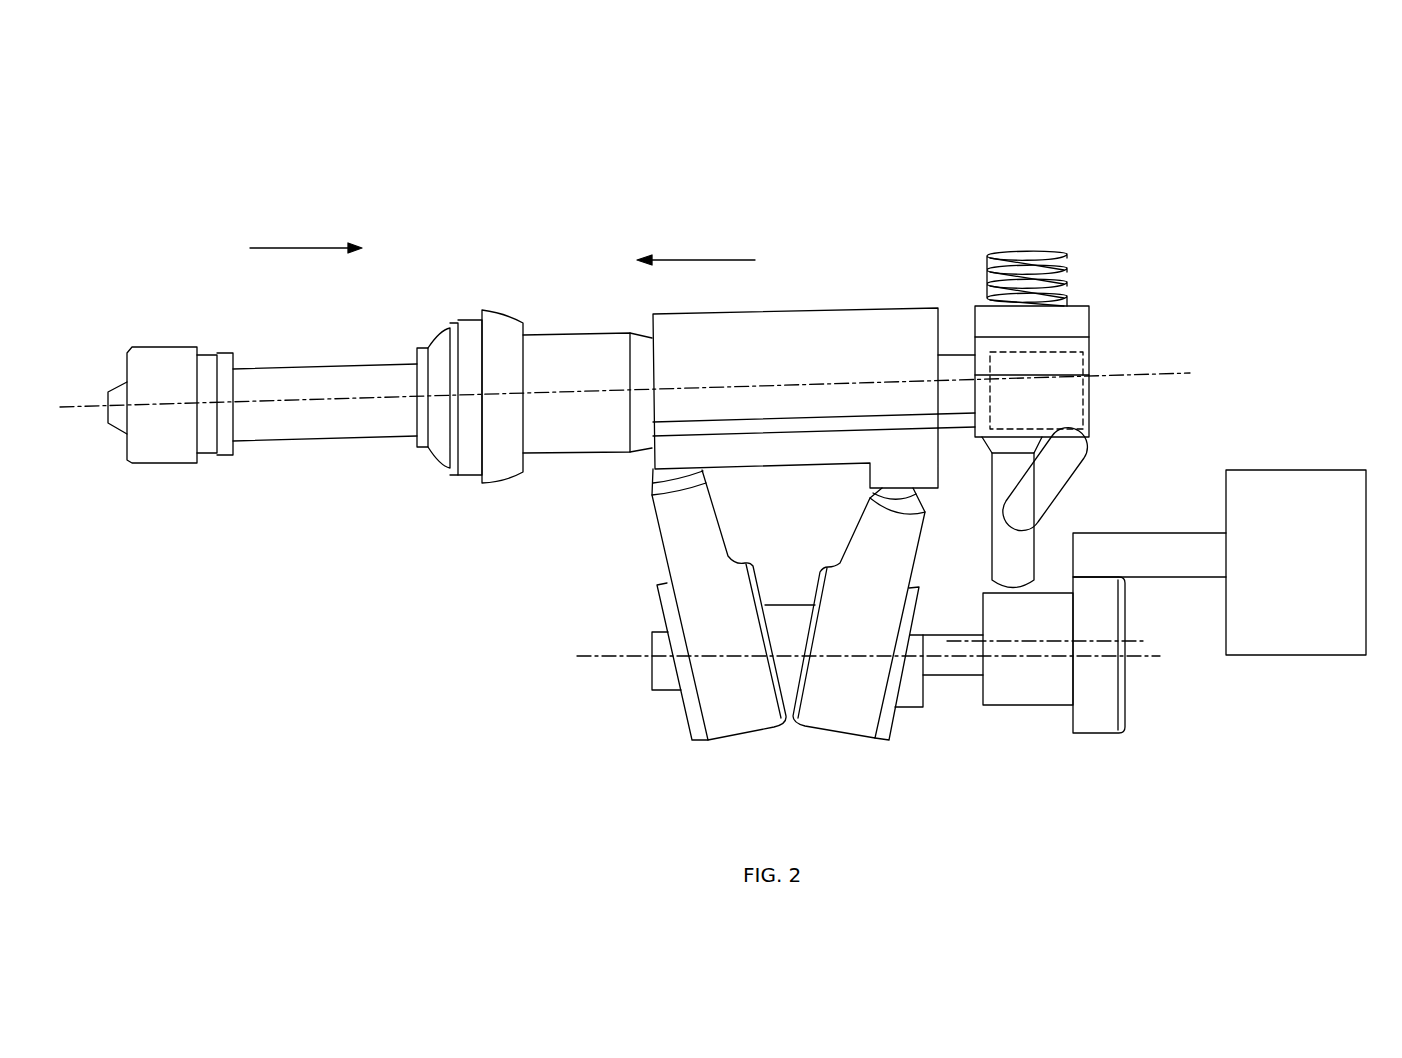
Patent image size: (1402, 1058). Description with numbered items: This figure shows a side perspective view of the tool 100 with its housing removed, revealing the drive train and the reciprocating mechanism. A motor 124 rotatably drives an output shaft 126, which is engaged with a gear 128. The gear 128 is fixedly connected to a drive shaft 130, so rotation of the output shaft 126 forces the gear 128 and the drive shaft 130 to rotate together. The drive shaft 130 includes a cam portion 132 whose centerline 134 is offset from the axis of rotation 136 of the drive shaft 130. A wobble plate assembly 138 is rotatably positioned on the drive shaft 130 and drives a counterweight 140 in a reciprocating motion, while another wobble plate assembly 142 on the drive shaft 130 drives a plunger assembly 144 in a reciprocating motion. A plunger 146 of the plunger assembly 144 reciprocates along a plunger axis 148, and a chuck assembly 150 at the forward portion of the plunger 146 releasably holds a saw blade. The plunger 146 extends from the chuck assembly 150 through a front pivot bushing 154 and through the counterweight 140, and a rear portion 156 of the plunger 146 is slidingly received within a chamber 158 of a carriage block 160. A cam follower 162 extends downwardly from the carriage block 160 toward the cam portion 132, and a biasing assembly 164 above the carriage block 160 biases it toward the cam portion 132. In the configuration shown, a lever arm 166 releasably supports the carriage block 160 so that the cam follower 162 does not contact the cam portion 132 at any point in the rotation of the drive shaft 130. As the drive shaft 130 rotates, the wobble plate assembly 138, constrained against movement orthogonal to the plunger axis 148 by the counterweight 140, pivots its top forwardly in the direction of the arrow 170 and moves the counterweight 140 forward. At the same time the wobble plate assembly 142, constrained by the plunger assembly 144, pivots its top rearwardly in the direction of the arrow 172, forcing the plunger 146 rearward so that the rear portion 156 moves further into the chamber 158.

The tool assembly 100 is at (709, 146).
The motor 124 is at (1282, 470).
The output shaft 126 is at (1170, 533).
The gear 128 is at (1092, 733).
The drive shaft 130 is at (932, 676).
The cam portion 132 is at (1000, 707).
The centerline 134 is at (948, 641).
The axis of rotation 136 is at (585, 655).
The wobble plate assembly 138 is at (832, 738).
The counterweight 140 is at (840, 308).
The wobble plate assembly 142 is at (708, 740).
The plunger assembly 144 is at (475, 245).
The plunger 146 is at (270, 440).
The plunger axis 148 is at (82, 406).
The chuck assembly 150 is at (157, 347).
The front pivot bushing 154 is at (440, 468).
The rear portion 156 is at (1000, 363).
The chamber 158 is at (1082, 416).
The carriage block 160 is at (1089, 318).
The cam follower 162 is at (1035, 560).
The biasing assembly 164 is at (1047, 250).
The lever arm 166 is at (1090, 457).
The arrow 170 is at (686, 259).
The arrow 172 is at (283, 247).